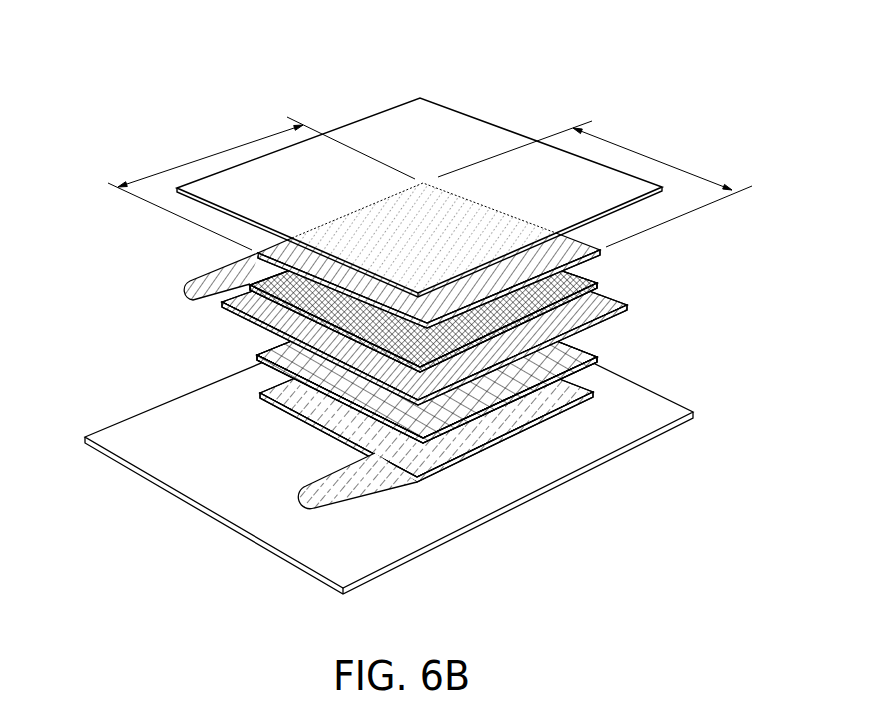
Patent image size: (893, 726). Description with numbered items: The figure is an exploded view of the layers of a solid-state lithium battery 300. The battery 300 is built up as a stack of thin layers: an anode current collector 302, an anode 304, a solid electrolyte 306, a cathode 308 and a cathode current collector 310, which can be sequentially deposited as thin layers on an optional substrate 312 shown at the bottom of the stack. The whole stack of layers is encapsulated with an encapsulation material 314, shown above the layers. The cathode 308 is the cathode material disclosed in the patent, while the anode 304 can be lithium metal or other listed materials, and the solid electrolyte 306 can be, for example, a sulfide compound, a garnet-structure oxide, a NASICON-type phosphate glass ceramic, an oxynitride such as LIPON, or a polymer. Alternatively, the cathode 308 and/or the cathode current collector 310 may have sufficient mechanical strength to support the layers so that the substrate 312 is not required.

The solid-state lithium battery 300 is at (176, 76).
The anode current collector 302 is at (213, 271).
The anode 304 is at (592, 273).
The solid electrolyte 306 is at (628, 300).
The cathode 308 is at (593, 347).
The cathode current collector 310 is at (585, 383).
The substrate 312 is at (155, 433).
The encapsulation material 314 is at (453, 137).